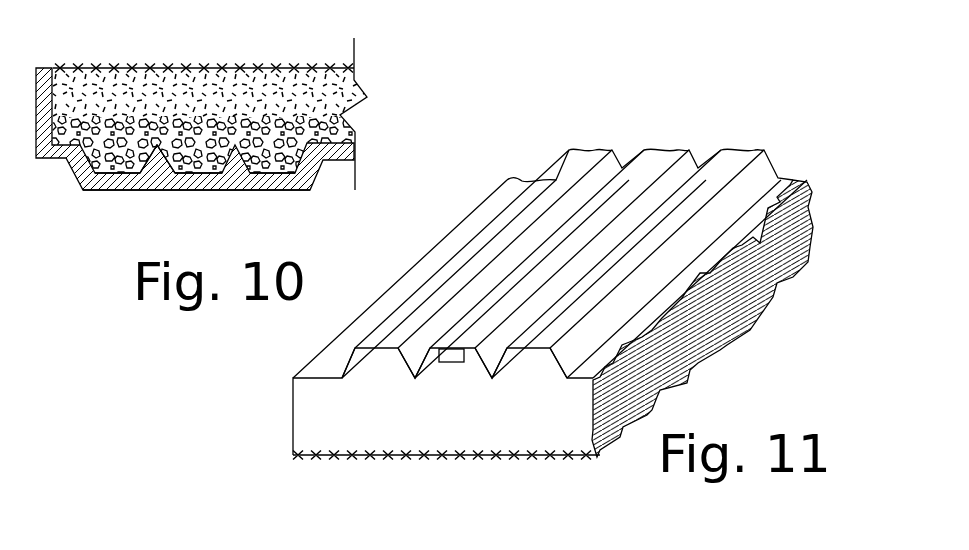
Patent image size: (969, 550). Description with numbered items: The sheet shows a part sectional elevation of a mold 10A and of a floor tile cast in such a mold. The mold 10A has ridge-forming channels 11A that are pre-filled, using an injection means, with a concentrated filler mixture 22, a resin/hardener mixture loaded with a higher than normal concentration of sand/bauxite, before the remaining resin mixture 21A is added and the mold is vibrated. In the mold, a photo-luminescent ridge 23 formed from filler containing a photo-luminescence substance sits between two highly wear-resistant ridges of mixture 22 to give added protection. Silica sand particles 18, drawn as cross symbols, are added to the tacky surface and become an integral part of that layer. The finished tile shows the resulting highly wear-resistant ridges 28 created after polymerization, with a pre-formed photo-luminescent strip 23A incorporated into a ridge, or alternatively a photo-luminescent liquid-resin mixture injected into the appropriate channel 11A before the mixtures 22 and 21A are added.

In FIG. 10, the mold 10A is at (52, 160).
In FIG. 10, the ridge-forming channels 11A is at (298, 191).
In FIG. 10, the silica sand particles 18 is at (100, 67).
In FIG. 11, the silica sand particles 18 is at (587, 452).
In FIG. 10, the resin mixture 21A is at (367, 97).
In FIG. 11, the resin mixture 21A is at (352, 429).
In FIG. 10, the concentrated filler mixture 22 is at (117, 167).
In FIG. 11, the concentrated filler mixture 22 is at (356, 385).
In FIG. 10, the photo-luminescent ridge 23 is at (192, 167).
In FIG. 11, the photo-luminescent strip 23A is at (658, 150).
In FIG. 11, the ridges 28 is at (585, 152).